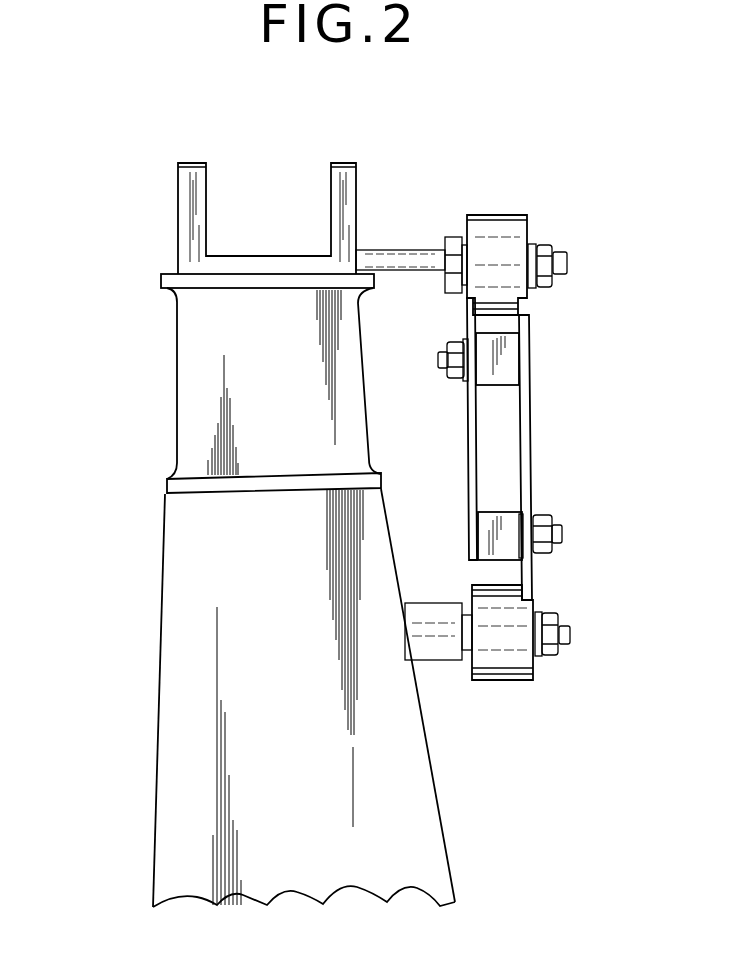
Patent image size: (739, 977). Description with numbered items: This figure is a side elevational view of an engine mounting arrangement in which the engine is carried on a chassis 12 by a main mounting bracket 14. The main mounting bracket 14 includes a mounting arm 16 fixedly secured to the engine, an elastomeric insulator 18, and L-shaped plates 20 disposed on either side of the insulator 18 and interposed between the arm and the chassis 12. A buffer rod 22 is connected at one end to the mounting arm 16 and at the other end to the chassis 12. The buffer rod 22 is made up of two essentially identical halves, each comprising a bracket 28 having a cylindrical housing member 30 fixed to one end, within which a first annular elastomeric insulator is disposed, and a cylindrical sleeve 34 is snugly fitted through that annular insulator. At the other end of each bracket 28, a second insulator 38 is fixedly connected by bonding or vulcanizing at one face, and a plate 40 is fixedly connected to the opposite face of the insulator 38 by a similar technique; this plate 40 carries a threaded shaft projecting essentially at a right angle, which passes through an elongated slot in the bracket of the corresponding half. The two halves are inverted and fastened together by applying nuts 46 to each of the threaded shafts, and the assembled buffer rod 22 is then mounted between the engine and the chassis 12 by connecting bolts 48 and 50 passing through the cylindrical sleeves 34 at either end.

The chassis 12 is at (183, 632).
The main mounting bracket 14 is at (137, 257).
The mounting arm 16 is at (197, 203).
The elastomeric insulator 18 is at (193, 343).
The L-shaped plate 20 is at (170, 282).
The buffer rod 22 is at (570, 397).
The bracket 28 is at (467, 435).
The cylindrical housing member 30 is at (493, 242).
The cylindrical sleeve 34 is at (528, 248).
The second insulator 38 is at (520, 340).
The plate 40 is at (477, 342).
The nut 46 is at (448, 345).
The connecting bolt 48 is at (567, 257).
The connecting bolt 50 is at (570, 632).